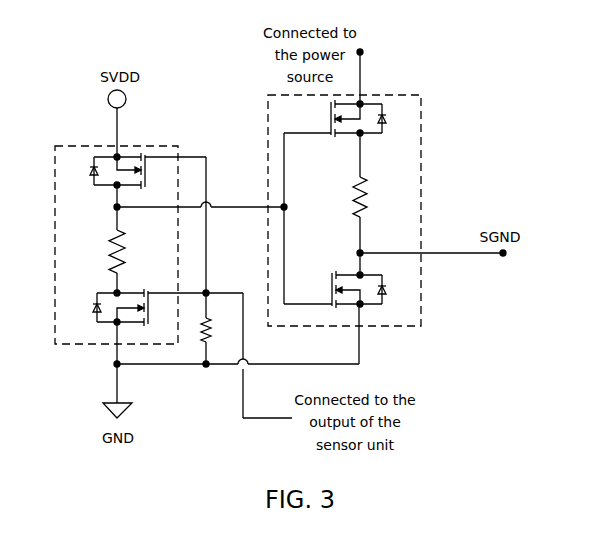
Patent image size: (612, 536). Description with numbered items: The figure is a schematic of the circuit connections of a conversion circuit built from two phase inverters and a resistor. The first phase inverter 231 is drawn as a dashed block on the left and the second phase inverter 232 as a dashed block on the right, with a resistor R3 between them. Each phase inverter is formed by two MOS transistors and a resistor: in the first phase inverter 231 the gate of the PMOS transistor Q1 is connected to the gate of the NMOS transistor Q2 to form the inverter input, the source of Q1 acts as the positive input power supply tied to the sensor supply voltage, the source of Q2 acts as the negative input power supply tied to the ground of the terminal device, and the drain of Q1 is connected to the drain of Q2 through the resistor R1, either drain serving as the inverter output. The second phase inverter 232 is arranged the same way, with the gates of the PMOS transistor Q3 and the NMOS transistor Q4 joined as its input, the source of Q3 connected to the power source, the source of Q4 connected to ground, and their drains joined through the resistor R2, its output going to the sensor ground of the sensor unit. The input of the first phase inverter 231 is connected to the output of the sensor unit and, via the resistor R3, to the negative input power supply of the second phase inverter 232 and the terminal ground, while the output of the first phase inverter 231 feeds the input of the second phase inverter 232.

The first phase inverter 231 is at (166, 146).
The second phase inverter 232 is at (408, 95).
The PMOS transistor Q1 is at (104, 171).
The NMOS transistor Q2 is at (107, 307).
The PMOS transistor Q3 is at (371, 118).
The NMOS transistor Q4 is at (372, 289).
The resistor R1 is at (130, 251).
The resistor R2 is at (343, 197).
The resistor R3 is at (217, 330).